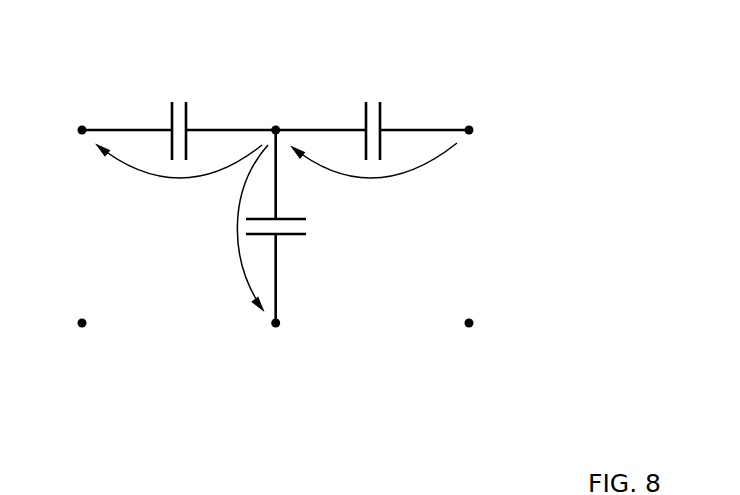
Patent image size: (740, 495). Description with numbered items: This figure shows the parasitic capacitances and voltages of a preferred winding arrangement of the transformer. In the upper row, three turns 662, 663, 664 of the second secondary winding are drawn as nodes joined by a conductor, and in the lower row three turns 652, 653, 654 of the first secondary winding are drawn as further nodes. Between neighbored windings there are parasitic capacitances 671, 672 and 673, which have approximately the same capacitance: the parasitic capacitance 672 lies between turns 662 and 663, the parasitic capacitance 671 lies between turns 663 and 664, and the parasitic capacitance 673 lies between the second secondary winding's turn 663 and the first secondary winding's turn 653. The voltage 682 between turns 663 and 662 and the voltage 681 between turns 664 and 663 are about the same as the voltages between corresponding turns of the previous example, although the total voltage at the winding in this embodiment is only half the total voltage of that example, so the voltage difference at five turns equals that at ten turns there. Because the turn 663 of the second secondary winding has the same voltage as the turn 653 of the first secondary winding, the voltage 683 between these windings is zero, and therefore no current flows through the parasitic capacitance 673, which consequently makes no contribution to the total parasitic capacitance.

The turn of first secondary winding 652 is at (82, 327).
The turn of first secondary winding 653 is at (276, 327).
The turn of first secondary winding 654 is at (469, 327).
The turn 662 is at (82, 126).
The turn of second secondary winding 663 is at (275, 126).
The turn 664 is at (469, 126).
The parasitic capacitance 671 is at (381, 113).
The parasitic capacitance 672 is at (187, 113).
The parasitic capacitance 673 is at (292, 237).
The voltage 681 is at (370, 178).
The voltage 682 is at (180, 178).
The voltage 683 is at (242, 273).